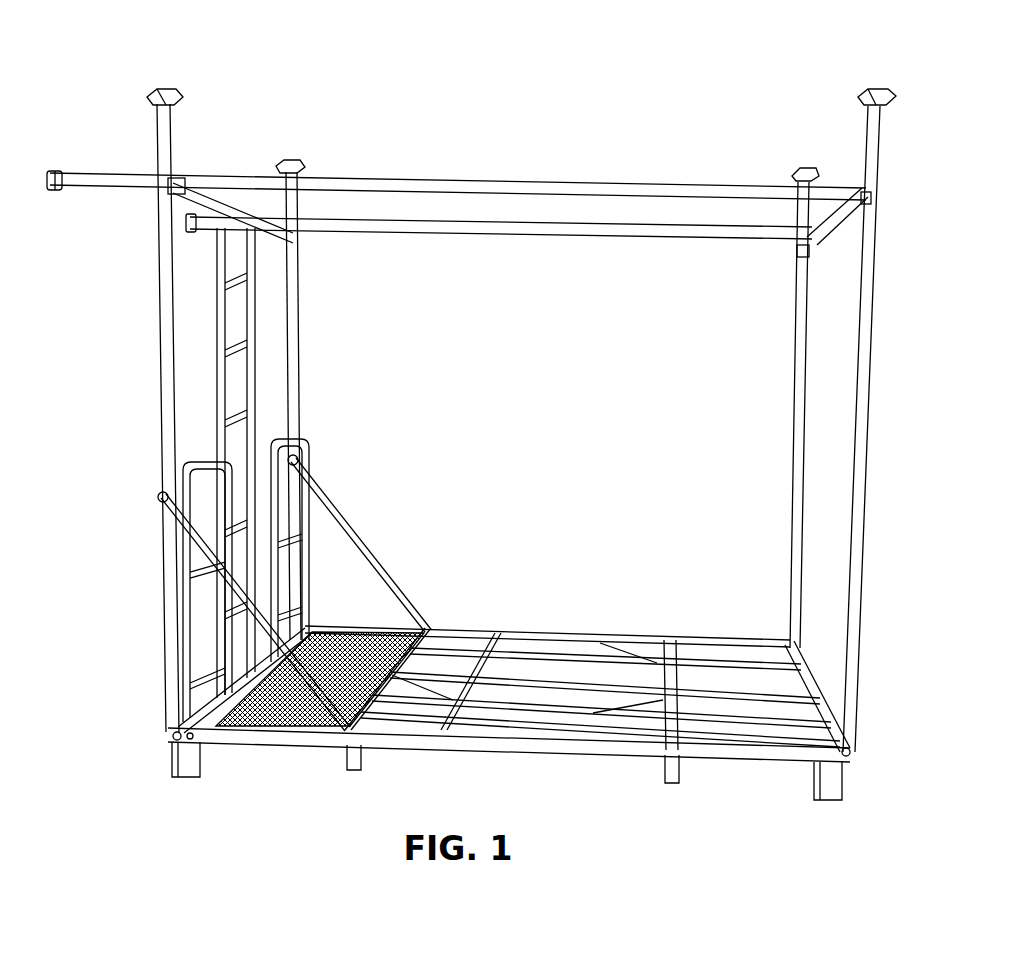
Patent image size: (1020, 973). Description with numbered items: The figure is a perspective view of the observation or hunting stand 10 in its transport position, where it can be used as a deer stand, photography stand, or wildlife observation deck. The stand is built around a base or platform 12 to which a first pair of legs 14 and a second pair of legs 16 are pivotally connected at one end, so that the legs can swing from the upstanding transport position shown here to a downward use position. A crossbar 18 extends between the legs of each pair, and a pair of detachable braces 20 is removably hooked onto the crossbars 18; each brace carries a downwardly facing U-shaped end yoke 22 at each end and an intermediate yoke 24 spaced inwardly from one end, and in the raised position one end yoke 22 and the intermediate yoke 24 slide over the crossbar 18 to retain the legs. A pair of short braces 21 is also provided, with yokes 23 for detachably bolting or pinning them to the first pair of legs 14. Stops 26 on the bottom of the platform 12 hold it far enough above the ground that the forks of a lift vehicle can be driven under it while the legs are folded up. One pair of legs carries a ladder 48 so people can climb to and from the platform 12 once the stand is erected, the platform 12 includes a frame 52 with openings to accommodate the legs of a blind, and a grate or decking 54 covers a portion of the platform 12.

The observation or hunting stand 10 is at (475, 434).
The platform 12 is at (603, 747).
The first pair of legs 14 is at (160, 392).
The second pair of legs 16 is at (862, 392).
The crossbar 18 is at (182, 197).
The detachable brace 20 is at (542, 185).
The short brace 21 is at (188, 572).
The end yoke 22 is at (52, 190).
The yoke 23 is at (160, 497).
The intermediate yoke 24 is at (173, 180).
The stop 26 is at (193, 763).
The ladder 48 is at (257, 303).
The frame 52 is at (715, 658).
The decking 54 is at (270, 705).